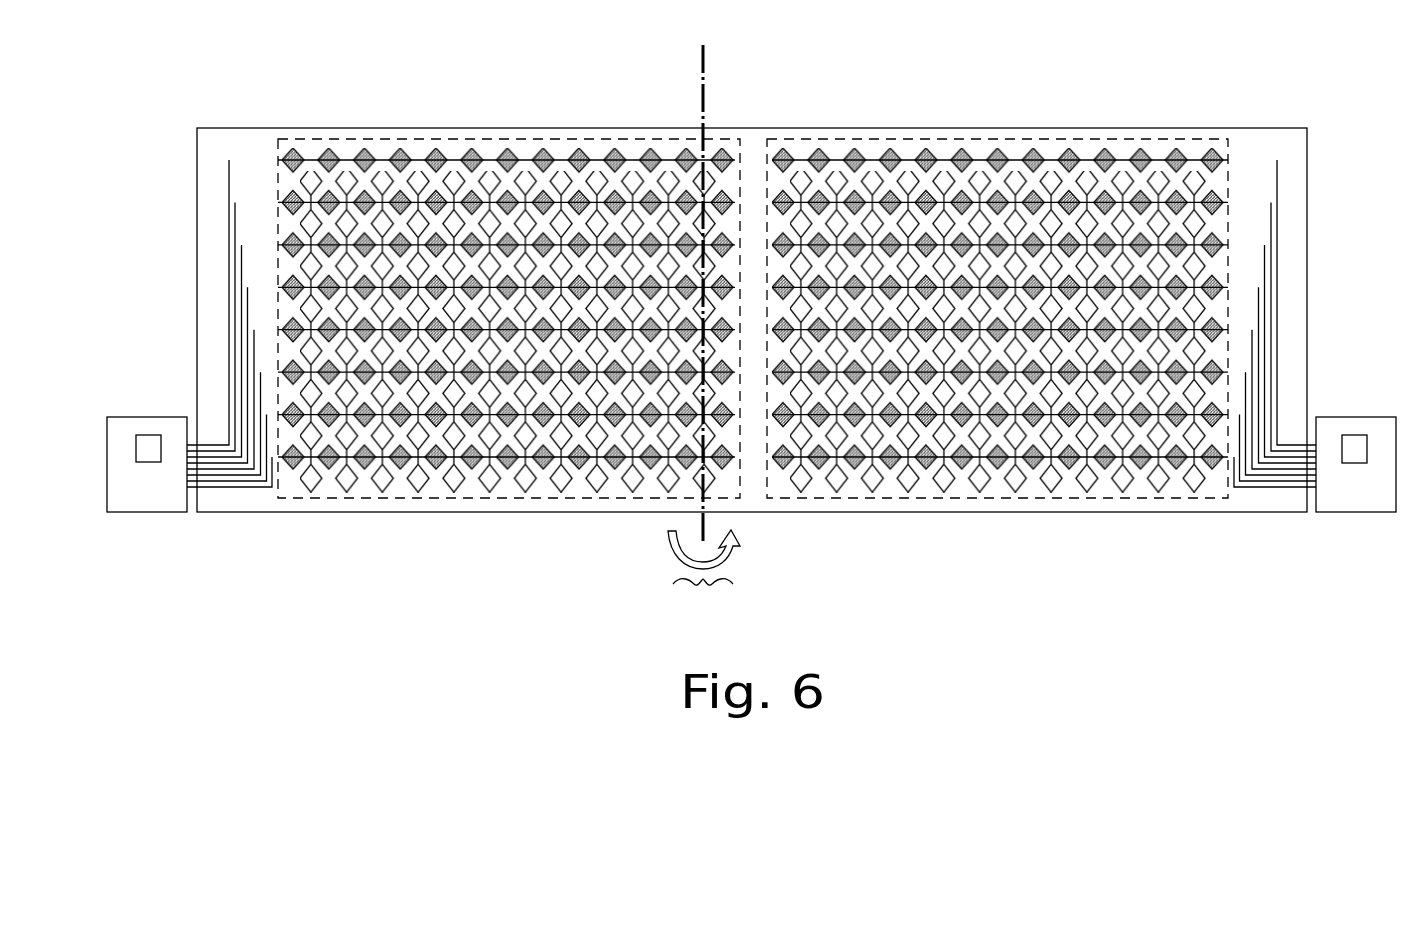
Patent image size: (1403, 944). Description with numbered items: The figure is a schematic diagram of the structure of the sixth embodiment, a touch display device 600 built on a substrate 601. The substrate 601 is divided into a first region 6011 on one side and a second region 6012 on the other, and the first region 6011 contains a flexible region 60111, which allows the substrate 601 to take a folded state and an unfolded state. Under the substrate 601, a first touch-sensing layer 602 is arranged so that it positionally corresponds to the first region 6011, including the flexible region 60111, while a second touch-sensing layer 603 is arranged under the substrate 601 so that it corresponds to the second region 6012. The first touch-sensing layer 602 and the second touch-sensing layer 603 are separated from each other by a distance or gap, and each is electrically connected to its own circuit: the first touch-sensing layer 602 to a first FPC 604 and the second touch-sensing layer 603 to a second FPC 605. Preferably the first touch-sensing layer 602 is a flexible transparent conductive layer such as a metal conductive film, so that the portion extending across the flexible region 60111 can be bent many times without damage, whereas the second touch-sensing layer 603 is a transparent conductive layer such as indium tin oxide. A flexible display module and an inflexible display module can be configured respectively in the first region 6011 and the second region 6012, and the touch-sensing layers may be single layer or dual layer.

The touch display device 600 is at (1032, 650).
The substrate 601 is at (249, 144).
The first region 6011 is at (732, 113).
The second region 6012 is at (997, 327).
The flexible region 60111 is at (704, 335).
The first touch-sensing layer 602 is at (508, 498).
The second touch-sensing layer 603 is at (1038, 498).
The first FPC 604 is at (148, 493).
The second FPC 605 is at (1338, 498).